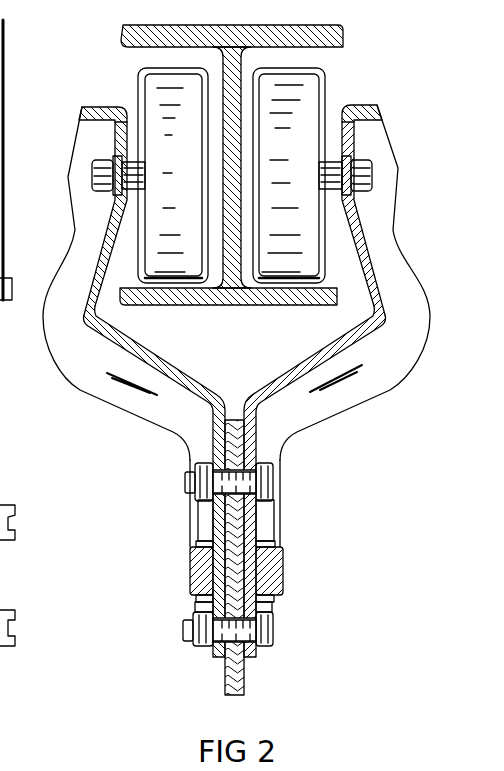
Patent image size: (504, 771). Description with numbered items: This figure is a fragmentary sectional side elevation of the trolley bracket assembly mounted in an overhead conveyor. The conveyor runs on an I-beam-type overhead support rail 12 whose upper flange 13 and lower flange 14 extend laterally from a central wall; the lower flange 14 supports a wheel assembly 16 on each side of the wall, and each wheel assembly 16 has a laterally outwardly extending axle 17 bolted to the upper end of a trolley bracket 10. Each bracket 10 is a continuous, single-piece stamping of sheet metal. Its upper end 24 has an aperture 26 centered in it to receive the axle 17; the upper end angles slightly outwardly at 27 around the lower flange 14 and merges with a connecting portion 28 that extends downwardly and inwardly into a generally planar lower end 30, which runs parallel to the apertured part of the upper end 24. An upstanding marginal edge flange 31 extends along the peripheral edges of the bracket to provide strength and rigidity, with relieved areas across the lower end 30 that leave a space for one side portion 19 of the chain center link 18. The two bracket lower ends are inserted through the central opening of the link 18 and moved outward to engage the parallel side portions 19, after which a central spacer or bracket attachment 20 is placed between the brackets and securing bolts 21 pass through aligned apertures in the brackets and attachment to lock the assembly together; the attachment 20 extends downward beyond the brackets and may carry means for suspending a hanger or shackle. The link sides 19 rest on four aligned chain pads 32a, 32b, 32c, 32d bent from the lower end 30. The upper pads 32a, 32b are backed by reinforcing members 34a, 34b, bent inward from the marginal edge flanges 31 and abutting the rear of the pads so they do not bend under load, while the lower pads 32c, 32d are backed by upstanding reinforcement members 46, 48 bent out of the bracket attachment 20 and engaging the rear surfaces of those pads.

The trolley bracket 10 is at (107, 407).
The overhead support rail 12 is at (207, 24).
The upper flange 13 is at (345, 30).
The lower flange 14 is at (236, 306).
The wheel assembly 16 is at (140, 76).
The axle 17 is at (142, 165).
The chain center link 18 is at (0, 566).
The side portions 19 is at (190, 570).
The bracket attachment 20 is at (226, 682).
The securing bolt 21 is at (275, 478).
The upper end 24 is at (110, 133).
The aperture 26 is at (112, 177).
The outwardly angled portion 27 is at (104, 284).
The connecting portion 28 is at (170, 375).
The lower end 30 is at (210, 418).
The marginal edge flange 31 is at (69, 335).
The chain pad 32a is at (278, 543).
The chain pad 32b is at (196, 545).
The chain pad 32c is at (196, 600).
The chain pad 32d is at (282, 597).
The reinforcing member 34a is at (275, 522).
The reinforcing member 34b is at (197, 525).
The reinforcement member 46 is at (196, 610).
The reinforcement member 48 is at (275, 608).